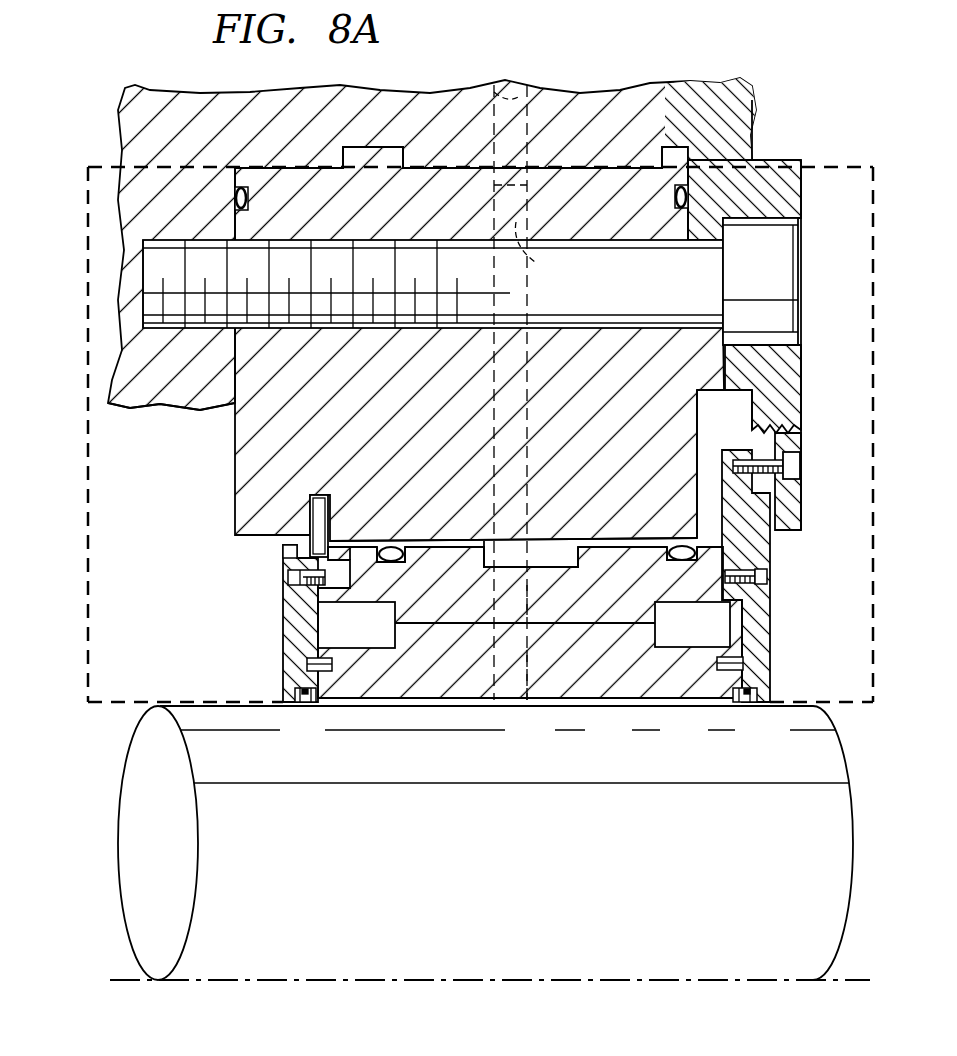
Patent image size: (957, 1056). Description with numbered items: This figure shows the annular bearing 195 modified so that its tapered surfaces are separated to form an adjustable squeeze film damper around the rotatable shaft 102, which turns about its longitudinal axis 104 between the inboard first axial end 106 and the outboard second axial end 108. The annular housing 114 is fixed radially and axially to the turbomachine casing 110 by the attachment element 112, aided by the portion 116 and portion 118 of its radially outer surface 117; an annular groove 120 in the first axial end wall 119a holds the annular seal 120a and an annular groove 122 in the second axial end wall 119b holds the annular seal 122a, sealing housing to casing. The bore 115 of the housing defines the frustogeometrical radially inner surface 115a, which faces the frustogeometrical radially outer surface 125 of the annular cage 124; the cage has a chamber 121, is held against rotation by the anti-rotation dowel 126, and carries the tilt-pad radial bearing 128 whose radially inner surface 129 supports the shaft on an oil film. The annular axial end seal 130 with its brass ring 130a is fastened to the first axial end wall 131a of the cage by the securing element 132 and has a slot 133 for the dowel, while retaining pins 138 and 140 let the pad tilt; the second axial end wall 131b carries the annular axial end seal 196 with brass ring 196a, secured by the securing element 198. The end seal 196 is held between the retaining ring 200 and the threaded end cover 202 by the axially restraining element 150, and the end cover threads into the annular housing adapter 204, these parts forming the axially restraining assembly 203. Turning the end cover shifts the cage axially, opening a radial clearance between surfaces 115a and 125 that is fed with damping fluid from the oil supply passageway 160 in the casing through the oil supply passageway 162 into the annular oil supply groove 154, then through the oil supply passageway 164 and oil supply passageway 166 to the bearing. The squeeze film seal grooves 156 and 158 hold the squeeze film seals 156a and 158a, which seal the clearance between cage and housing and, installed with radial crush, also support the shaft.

The rotatable shaft 102 is at (549, 859).
The longitudinal axis 104 is at (226, 984).
The first axial end 106 is at (88, 170).
The second axial end 108 is at (871, 172).
The casing 110 is at (182, 139).
The attachment element 112 is at (785, 318).
The annular housing 114 is at (384, 419).
The bore 115 is at (562, 538).
The frustogeometrical radially inner surface 115a is at (483, 538).
The portion of radially outer surface 116 is at (385, 147).
The radially outer surface 117 is at (330, 163).
The portion of radially outer surface 118 is at (700, 102).
The first axial end wall 119a is at (235, 395).
The second axial end wall 119b is at (748, 136).
The annular groove 120 is at (250, 200).
The annular seal 120a is at (233, 199).
The chamber 121 is at (655, 705).
The annular groove 122 is at (677, 198).
The annular seal 122a is at (700, 203).
The annular cage 124 is at (516, 618).
The frustogeometrical radially outer surface 125 is at (420, 566).
The anti-rotation dowel 126 is at (313, 512).
The radial bearing 128 is at (496, 674).
The radially inner surface 129 is at (598, 707).
The annular axial end seal 130 is at (288, 628).
The annular brass ring 130a is at (305, 705).
The first axial end wall 131a is at (307, 593).
The second axial end wall 131b is at (692, 625).
The securing element 132 is at (288, 578).
The slot 133 is at (289, 554).
The retaining pin 138 is at (310, 664).
The retaining pin 140 is at (745, 663).
The axially restraining element 150 is at (792, 466).
The annular oil supply groove 154 is at (486, 560).
The annular squeeze film seal groove 156 is at (400, 548).
The squeeze film seal 156a is at (388, 543).
The annular squeeze film seal groove 158 is at (660, 548).
The squeeze film seal 158a is at (682, 545).
The oil supply passageway 160 is at (520, 80).
The oil supply passageway 162 is at (530, 262).
The oil supply passageway 164 is at (552, 600).
The oil supply passageway 166 is at (527, 705).
The annular bearing 195 is at (73, 681).
The annular axial end seal 196 is at (762, 628).
The annular brass ring 196a is at (752, 705).
The securing element 198 is at (765, 580).
The retaining ring 200 is at (746, 453).
The end cover 202 is at (793, 494).
The axially restraining assembly 203 is at (808, 518).
The annular housing adapter 204 is at (790, 378).